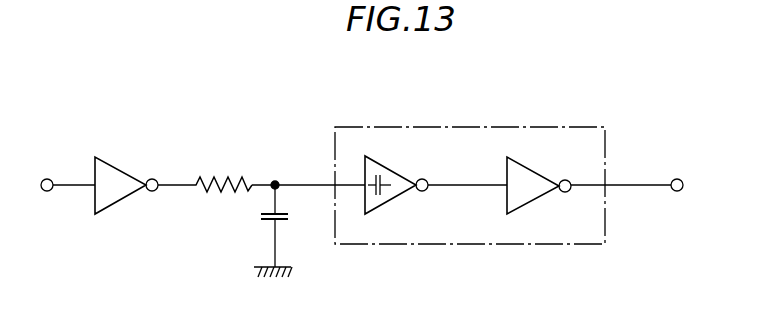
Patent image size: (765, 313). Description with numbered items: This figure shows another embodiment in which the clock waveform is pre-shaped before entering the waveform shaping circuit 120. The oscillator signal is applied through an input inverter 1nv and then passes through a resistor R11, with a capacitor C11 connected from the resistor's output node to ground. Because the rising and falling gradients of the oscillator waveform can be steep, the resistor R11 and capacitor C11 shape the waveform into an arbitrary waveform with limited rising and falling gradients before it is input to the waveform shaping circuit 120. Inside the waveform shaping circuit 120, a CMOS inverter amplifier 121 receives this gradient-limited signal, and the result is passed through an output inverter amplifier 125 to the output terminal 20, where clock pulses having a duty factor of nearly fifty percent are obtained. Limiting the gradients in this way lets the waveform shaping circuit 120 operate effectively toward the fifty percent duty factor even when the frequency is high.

The inverter 1nv is at (128, 170).
The resistor R11 is at (231, 178).
The capacitor C11 is at (262, 217).
The waveform shaping circuit 120 is at (461, 126).
The inverter amplifier 121 is at (405, 171).
The output inverter amplifier 125 is at (544, 175).
The output terminal 20 is at (682, 179).